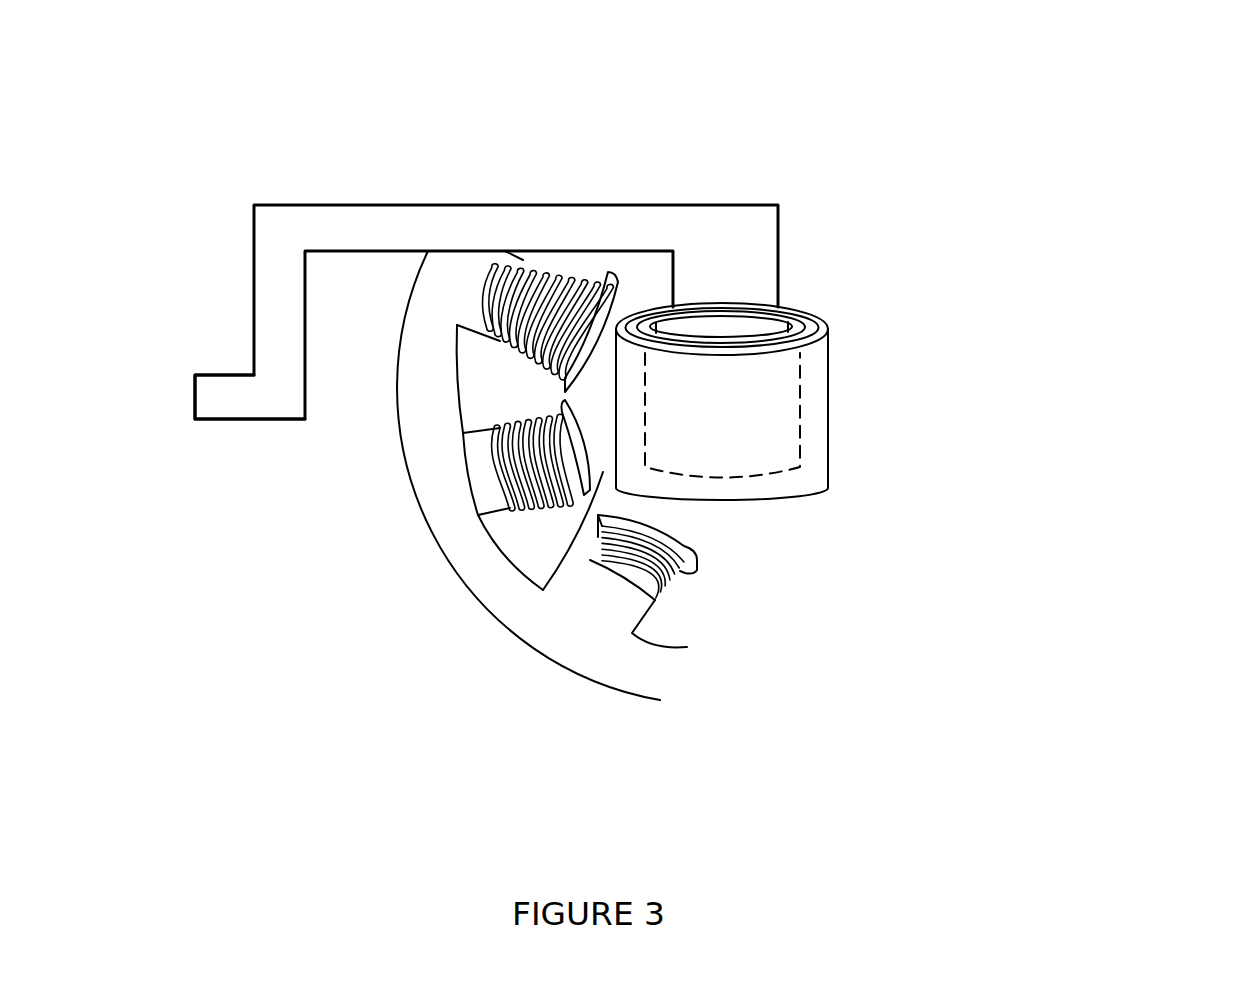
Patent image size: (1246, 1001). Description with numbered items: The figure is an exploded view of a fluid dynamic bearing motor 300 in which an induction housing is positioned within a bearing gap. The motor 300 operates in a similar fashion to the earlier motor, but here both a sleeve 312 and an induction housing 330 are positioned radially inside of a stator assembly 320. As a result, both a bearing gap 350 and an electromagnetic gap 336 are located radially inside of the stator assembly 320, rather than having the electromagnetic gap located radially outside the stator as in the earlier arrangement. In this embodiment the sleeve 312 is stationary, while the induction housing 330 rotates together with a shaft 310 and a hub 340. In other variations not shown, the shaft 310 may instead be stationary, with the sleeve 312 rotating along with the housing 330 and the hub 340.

The fluid dynamic bearing motor 300 is at (1089, 141).
The shaft 310 is at (738, 250).
The sleeve 312 is at (828, 463).
The stator assembly 320 is at (442, 487).
The induction housing 330 is at (802, 388).
The electromagnetic gap 336 is at (603, 472).
The hub 340 is at (255, 398).
The bearing gap 350 is at (805, 322).